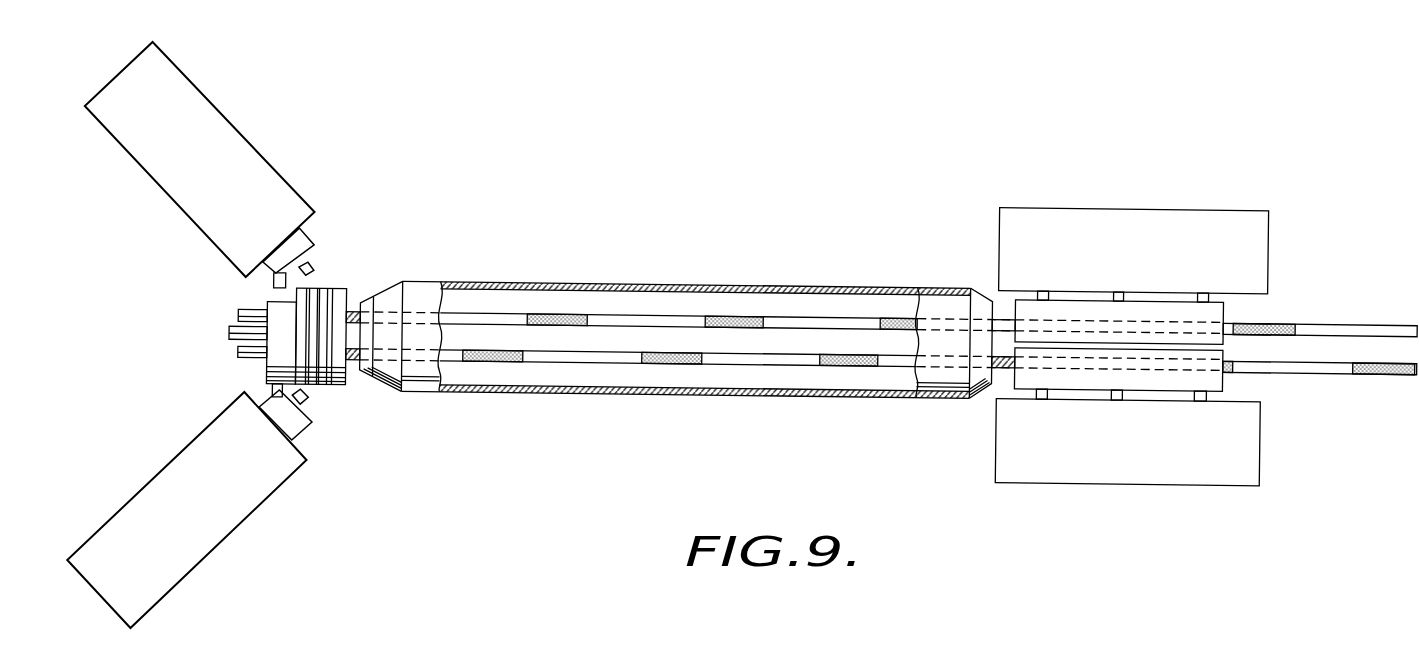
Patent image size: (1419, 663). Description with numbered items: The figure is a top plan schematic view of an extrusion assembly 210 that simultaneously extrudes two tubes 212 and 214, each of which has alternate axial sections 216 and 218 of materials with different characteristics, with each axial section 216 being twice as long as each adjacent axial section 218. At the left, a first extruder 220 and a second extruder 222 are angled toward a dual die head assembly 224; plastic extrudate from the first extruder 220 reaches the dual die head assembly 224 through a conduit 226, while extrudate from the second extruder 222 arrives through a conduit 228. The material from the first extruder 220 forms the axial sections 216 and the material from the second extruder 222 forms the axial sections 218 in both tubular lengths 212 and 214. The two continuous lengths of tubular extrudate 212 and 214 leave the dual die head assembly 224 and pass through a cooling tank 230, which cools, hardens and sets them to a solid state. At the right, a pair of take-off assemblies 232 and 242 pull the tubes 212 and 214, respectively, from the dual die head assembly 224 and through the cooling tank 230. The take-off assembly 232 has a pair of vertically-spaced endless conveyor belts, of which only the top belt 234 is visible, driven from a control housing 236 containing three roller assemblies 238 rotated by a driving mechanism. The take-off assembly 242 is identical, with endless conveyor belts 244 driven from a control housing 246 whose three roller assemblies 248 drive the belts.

The extrusion assembly 210 is at (667, 228).
The tube 212 is at (1398, 305).
The tube 214 is at (1410, 378).
The axial section 216 is at (672, 317).
The axial section 218 is at (560, 317).
The first extruder 220 is at (227, 125).
The second extruder 222 is at (205, 553).
The dual die head assembly 224 is at (340, 284).
The conduit 226 is at (275, 280).
The conduit 228 is at (270, 388).
The cooling tank 230 is at (905, 287).
The take-off assembly 232 is at (1181, 249).
The top endless conveyor belt 234 is at (1220, 313).
The control housing 236 is at (1125, 210).
The roller assemblies 238 is at (1038, 290).
The take-off assembly 242 is at (1166, 440).
The endless conveyor belt 244 is at (1215, 380).
The control housing 246 is at (1245, 444).
The roller assemblies 248 is at (1033, 397).